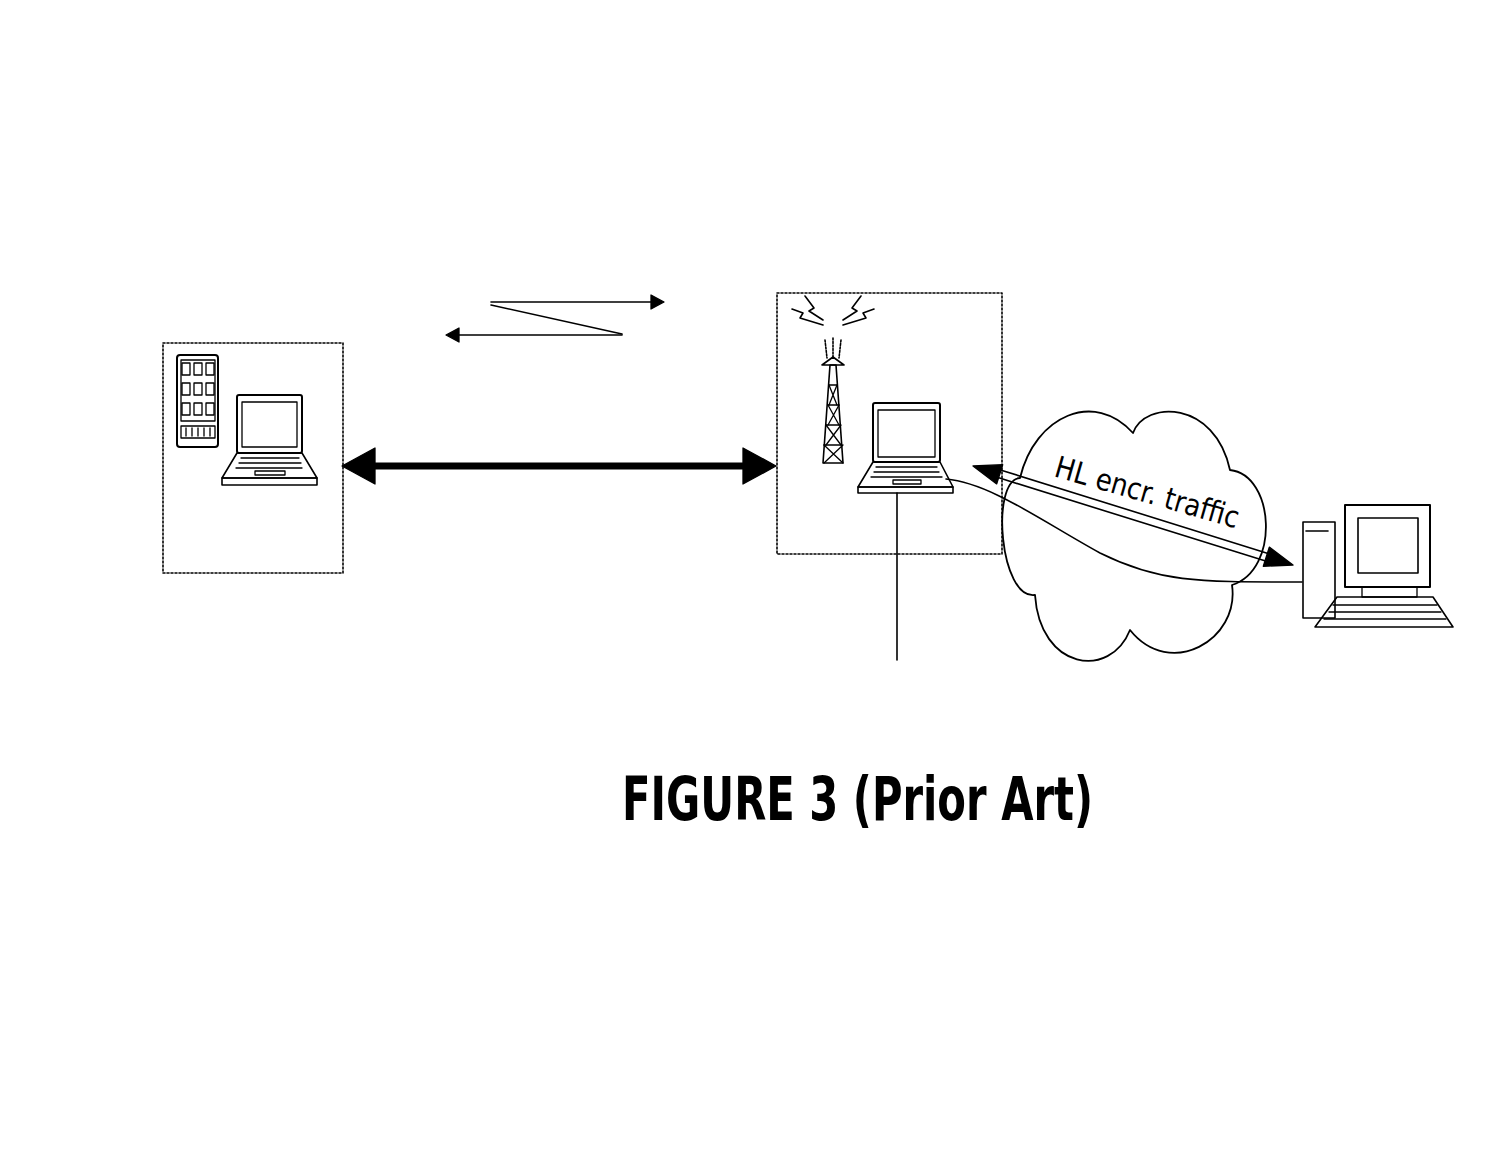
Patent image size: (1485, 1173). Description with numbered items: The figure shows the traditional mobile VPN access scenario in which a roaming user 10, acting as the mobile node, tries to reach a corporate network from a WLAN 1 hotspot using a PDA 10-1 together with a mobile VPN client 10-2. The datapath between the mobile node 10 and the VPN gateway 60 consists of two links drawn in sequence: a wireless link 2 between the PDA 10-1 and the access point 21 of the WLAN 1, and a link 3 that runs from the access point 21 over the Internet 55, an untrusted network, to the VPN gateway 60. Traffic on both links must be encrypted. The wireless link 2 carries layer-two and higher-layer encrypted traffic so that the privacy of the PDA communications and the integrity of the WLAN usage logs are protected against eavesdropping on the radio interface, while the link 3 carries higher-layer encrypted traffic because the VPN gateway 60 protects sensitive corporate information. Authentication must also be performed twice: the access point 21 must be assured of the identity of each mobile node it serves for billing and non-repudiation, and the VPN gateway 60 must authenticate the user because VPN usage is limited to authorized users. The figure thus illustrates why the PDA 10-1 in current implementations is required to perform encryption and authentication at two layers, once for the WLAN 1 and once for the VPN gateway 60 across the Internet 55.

The WLAN 1 is at (549, 514).
The wireless link 2 is at (574, 297).
The link over the Internet 3 is at (1076, 538).
The roaming user (mobile node) 10 is at (344, 552).
The PDA 10-1 is at (212, 358).
The mobile VPN client 10-2 is at (282, 396).
The access point 21 is at (777, 355).
The Internet 55 is at (1203, 613).
The VPN gateway 60 is at (1372, 500).